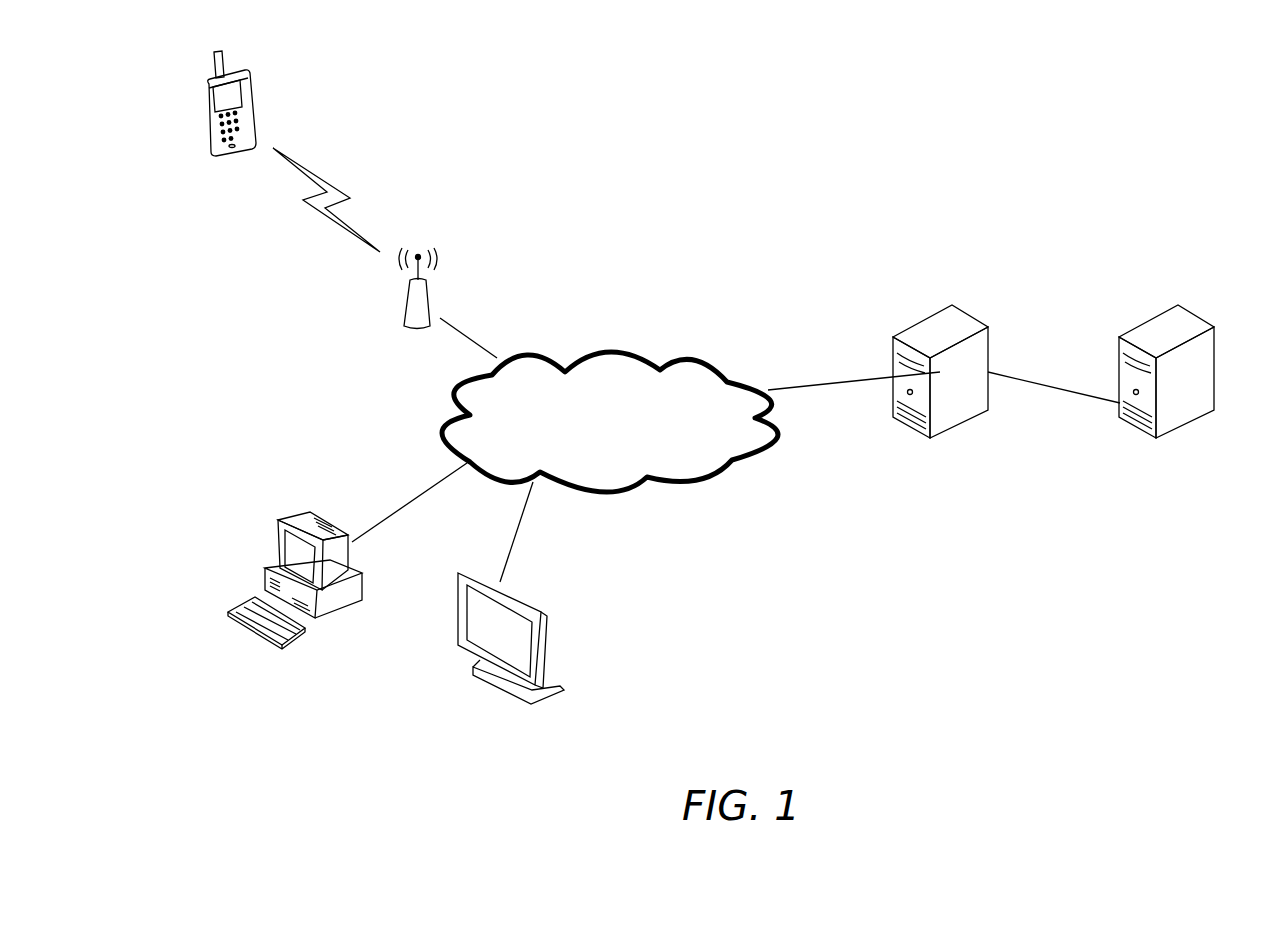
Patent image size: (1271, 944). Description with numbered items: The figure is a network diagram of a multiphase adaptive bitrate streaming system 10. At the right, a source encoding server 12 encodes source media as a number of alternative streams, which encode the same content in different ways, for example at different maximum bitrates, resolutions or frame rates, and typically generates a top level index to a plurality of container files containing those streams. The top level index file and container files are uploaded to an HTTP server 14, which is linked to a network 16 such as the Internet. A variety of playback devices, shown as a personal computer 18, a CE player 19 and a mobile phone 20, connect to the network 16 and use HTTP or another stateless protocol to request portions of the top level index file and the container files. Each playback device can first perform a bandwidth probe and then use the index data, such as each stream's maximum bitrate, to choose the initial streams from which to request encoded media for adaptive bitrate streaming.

The multiphase adaptive bitrate streaming system 10 is at (764, 198).
The source encoding server 12 is at (1185, 307).
The HTTP server 14 is at (960, 322).
The network 16 is at (643, 480).
The personal computer 18 is at (258, 635).
The CE player 19 is at (473, 653).
The mobile phone 20 is at (250, 77).